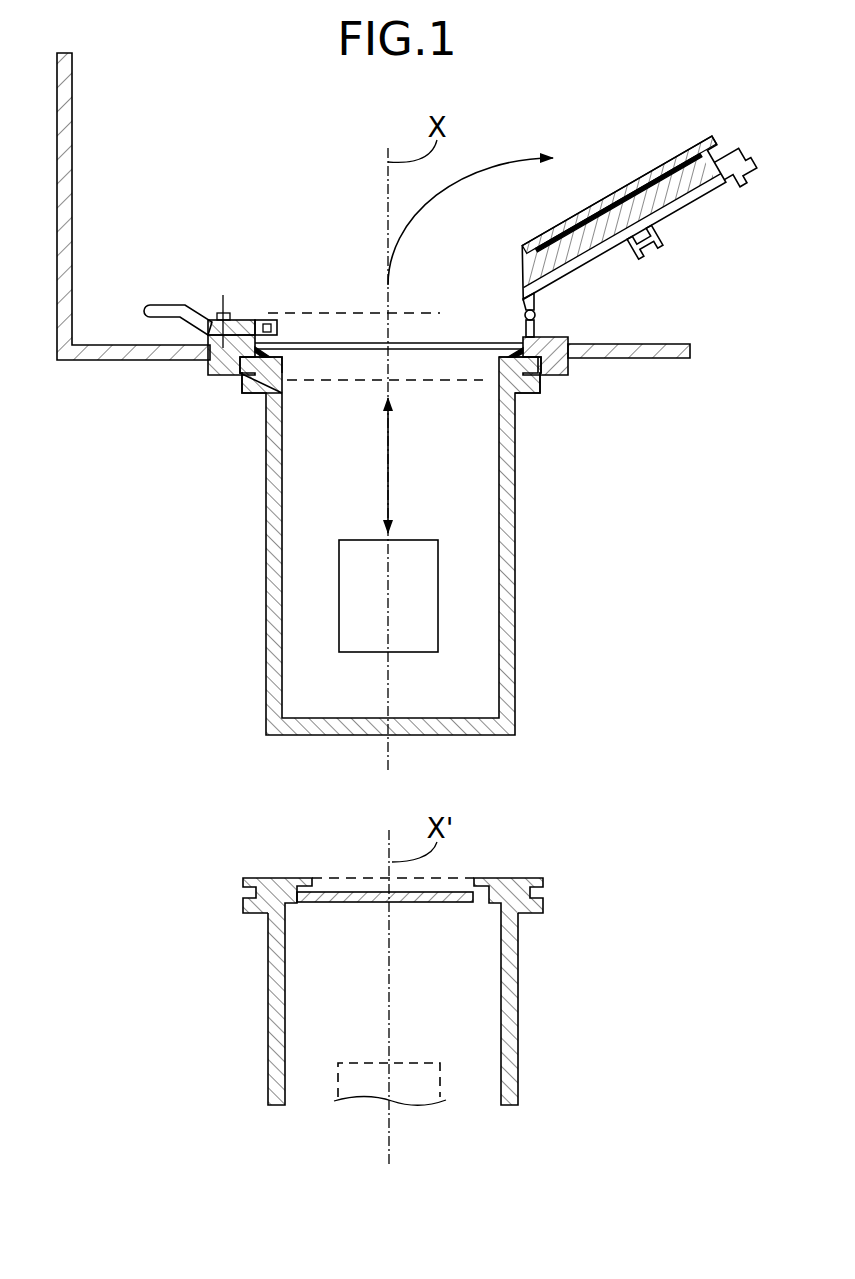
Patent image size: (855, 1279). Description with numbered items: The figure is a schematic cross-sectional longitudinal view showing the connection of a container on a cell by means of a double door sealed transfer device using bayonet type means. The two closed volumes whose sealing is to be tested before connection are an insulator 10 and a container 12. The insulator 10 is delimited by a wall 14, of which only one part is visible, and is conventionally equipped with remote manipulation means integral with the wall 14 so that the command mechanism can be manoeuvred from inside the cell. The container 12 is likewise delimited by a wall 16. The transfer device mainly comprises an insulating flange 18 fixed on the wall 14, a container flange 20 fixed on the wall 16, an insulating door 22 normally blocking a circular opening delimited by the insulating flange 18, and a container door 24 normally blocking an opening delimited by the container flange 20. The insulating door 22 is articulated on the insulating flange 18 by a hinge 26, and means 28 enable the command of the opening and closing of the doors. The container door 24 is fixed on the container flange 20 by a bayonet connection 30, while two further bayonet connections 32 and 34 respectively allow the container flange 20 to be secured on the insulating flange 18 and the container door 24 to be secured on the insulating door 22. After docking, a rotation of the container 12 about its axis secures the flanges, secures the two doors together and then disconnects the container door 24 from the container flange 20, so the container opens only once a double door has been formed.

The insulator 10 is at (289, 178).
The container 12 is at (324, 475).
The wall 14 is at (70, 162).
The wall 16 is at (266, 642).
The insulating flange 18 is at (213, 374).
The container flange 20 is at (246, 390).
The insulating door 22 is at (633, 222).
The container door 24 is at (532, 533).
The hinge 26 is at (548, 320).
The means for commanding door opening and closing 28 is at (179, 297).
The bayonet connection 30 is at (268, 876).
The bayonet connection 32 is at (548, 384).
The bayonet connection 34 is at (675, 157).